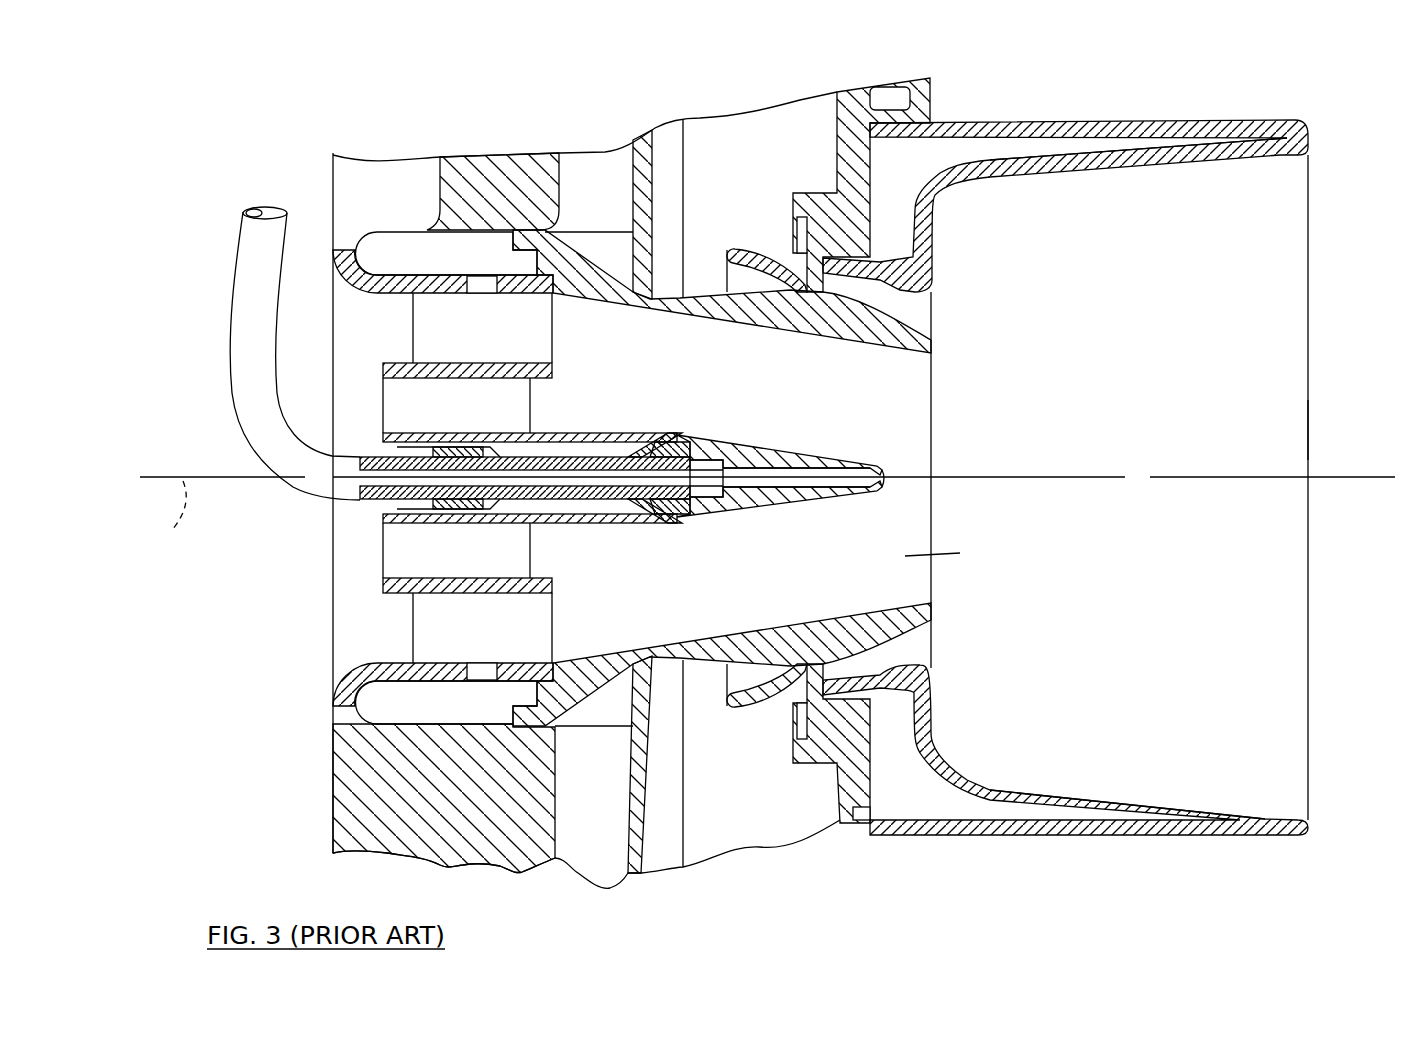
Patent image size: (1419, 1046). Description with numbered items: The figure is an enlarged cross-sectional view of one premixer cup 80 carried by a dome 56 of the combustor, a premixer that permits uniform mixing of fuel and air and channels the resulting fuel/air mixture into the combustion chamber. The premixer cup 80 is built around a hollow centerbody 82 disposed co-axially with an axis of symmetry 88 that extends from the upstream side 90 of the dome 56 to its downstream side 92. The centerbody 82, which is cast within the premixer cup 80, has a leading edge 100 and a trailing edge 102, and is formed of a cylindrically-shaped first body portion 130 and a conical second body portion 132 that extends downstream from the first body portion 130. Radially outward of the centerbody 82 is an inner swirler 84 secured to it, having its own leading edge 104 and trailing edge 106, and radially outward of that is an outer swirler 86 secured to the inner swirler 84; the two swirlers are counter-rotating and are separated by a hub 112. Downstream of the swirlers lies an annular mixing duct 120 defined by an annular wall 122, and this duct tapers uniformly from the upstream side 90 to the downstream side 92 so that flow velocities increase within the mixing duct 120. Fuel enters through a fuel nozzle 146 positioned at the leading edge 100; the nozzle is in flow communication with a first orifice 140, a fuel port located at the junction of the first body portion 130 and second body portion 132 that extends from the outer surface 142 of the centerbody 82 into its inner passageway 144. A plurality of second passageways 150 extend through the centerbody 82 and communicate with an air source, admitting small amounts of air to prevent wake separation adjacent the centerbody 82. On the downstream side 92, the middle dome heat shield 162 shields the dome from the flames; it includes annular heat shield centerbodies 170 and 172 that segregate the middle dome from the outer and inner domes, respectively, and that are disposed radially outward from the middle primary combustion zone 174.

The dome 56 is at (1282, 420).
The premixer cup 80 is at (935, 370).
The centerbody 82 is at (857, 492).
The inner swirler 84 is at (365, 415).
The outer swirler 86 is at (413, 622).
The axis of symmetry 88 is at (165, 541).
The upstream side 90 is at (280, 642).
The downstream side 92 is at (962, 606).
The leading edge 100 is at (365, 520).
The trailing edge 102 is at (883, 470).
The leading edge 104 is at (365, 385).
The trailing edge 106 is at (550, 570).
The hub 112 is at (368, 355).
The annular mixing duct 120 is at (950, 552).
The annular wall 122 is at (790, 615).
The first body portion 130 is at (627, 521).
The second body portion 132 is at (777, 445).
The first orifice 140 is at (657, 433).
The outer surface 142 is at (677, 435).
The inner passageway 144 is at (550, 487).
The fuel nozzle 146 is at (300, 498).
The second passageways 150 is at (800, 478).
The middle dome heat shield 162 is at (1300, 87).
The heat shield centerbody 170 is at (1280, 157).
The heat shield centerbody 172 is at (1210, 788).
The middle primary combustion zone 174 is at (1160, 446).